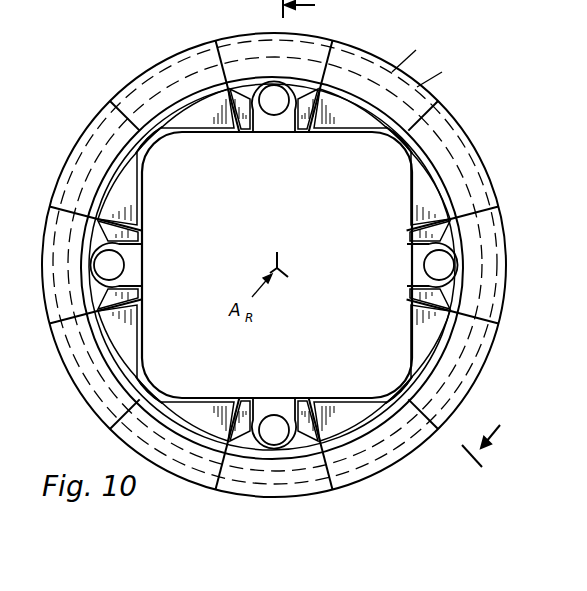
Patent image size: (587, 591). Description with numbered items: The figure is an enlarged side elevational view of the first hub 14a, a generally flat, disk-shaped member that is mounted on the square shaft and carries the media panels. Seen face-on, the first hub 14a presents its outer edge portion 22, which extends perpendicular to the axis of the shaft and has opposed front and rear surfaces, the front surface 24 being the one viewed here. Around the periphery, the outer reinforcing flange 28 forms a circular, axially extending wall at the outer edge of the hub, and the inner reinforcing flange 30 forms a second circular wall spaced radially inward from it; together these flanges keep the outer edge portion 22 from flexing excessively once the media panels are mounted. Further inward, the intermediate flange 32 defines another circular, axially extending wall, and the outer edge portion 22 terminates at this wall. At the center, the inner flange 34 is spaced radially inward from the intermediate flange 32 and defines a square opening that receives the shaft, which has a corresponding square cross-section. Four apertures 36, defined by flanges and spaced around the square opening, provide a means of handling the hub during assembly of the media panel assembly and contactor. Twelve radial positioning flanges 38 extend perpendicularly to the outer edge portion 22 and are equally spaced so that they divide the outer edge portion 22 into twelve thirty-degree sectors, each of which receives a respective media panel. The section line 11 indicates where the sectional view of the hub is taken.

The section line 11- 11 is at (401, 233).
The first hub 14a is at (291, 265).
The outer edge portion 22 is at (418, 57).
The front surface 24 is at (441, 73).
The outer reinforcing flange 28 is at (275, 249).
The inner reinforcing flange 30 is at (275, 249).
The intermediate flange 32 is at (274, 265).
The inner flange 34 is at (277, 264).
The apertures 36 is at (273, 264).
The radial positioning flanges 38 is at (273, 249).